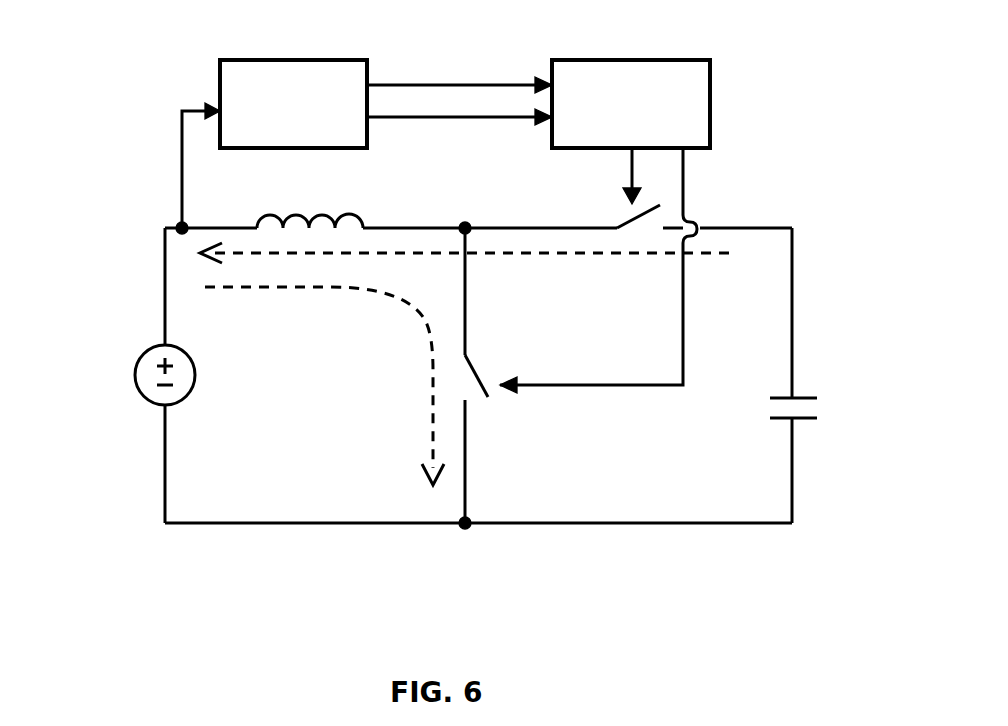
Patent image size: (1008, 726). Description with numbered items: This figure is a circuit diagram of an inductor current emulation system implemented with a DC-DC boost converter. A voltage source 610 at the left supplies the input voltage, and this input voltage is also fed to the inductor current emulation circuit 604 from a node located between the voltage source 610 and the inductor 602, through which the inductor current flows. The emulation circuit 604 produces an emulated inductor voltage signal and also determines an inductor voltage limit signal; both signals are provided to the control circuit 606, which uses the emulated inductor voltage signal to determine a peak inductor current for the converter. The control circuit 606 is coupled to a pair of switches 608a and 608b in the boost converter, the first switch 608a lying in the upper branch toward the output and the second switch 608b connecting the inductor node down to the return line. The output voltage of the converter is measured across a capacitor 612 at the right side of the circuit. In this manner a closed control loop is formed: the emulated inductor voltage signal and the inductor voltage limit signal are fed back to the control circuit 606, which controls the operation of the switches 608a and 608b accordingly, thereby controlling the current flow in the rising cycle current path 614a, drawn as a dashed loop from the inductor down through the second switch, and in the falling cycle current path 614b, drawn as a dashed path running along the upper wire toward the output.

The inductor 602 is at (305, 216).
The inductor current emulation circuit 604 is at (274, 144).
The control circuit 606 is at (538, 225).
The switch 608a is at (636, 219).
The switch 608b is at (476, 378).
The voltage source 610 is at (148, 350).
The capacitor 612 is at (810, 395).
The rising cycle current path 614a is at (326, 288).
The falling cycle current path 614b is at (548, 253).